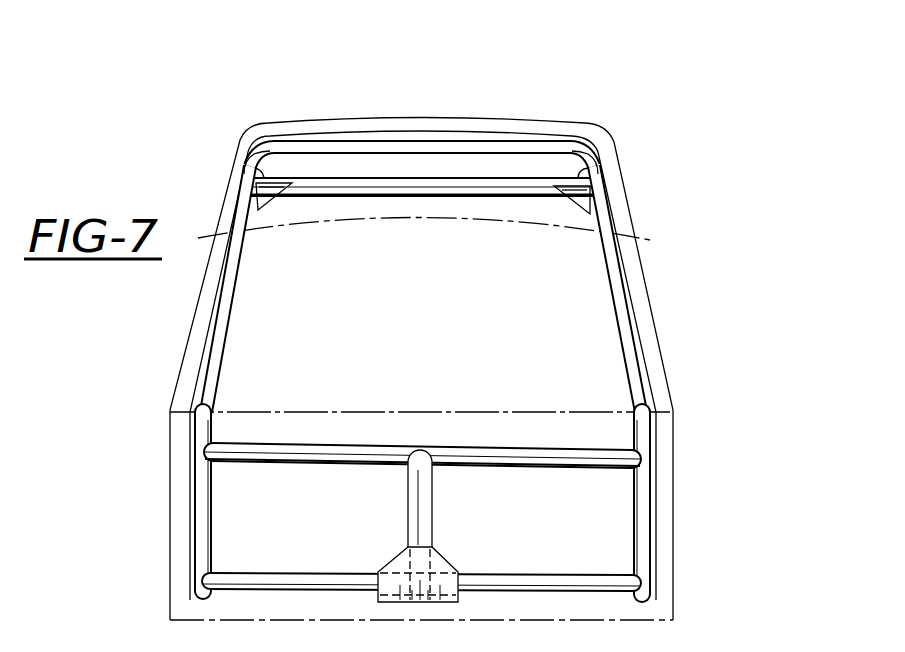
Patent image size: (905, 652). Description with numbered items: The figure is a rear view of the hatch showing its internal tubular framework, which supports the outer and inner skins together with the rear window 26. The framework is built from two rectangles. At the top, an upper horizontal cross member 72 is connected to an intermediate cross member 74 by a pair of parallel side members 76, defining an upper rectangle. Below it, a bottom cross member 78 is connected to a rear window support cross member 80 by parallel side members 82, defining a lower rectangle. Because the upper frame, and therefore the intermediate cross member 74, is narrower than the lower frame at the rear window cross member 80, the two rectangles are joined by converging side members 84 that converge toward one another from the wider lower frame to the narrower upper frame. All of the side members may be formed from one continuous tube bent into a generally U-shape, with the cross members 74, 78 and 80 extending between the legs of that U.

The rear window 26 is at (428, 222).
The upper horizontal cross member 72 is at (486, 140).
The intermediate cross member 74 is at (490, 197).
The parallel side members 76 is at (244, 152).
The bottom cross member 78 is at (563, 577).
The rear window support cross member 80 is at (507, 452).
The parallel side members 82 is at (192, 523).
The converging side members 84 is at (228, 323).